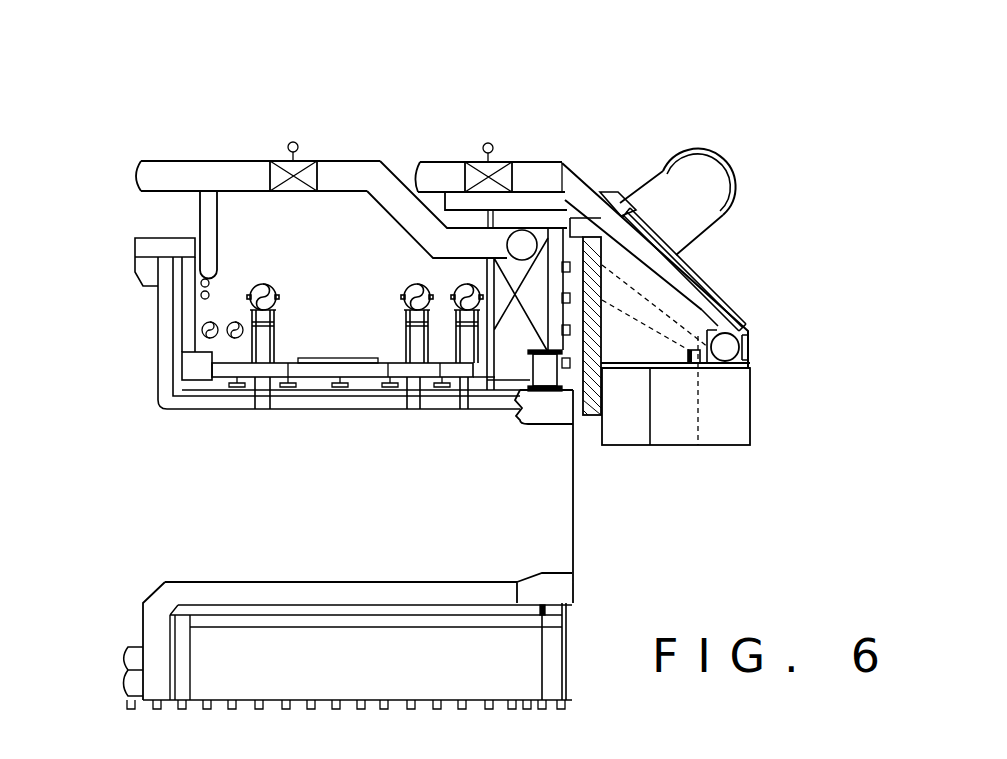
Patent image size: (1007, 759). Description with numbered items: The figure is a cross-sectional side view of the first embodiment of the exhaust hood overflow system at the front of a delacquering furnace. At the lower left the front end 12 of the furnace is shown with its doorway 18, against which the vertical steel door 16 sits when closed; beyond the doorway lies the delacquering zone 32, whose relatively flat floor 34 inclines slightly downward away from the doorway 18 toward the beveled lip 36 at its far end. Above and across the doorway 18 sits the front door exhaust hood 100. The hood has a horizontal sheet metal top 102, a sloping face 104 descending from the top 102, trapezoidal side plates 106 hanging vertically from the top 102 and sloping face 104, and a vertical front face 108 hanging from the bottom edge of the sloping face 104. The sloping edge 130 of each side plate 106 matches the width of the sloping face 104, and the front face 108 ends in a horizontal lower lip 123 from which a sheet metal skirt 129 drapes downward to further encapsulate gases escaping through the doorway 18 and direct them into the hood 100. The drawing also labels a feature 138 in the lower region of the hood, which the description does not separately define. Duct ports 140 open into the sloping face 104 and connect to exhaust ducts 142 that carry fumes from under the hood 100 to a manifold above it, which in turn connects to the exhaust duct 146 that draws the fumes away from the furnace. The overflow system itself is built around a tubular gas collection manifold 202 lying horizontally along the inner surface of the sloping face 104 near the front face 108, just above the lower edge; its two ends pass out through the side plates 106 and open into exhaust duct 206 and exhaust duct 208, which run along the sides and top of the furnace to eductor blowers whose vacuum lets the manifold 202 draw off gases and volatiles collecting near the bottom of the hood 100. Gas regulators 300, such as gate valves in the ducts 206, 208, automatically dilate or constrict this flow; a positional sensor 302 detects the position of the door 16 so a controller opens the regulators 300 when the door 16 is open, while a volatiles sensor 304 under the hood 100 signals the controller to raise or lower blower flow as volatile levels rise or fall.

The front end 12 is at (278, 92).
The door 16 is at (586, 446).
The doorway 18 is at (582, 517).
The delacquering zone 32 is at (367, 545).
The floor 34 is at (232, 582).
The beveled lip 36 is at (148, 593).
The front door exhaust hood 100 is at (751, 111).
The top 102 is at (609, 174).
The sloping face 104 is at (705, 283).
The side plates 106 is at (635, 345).
The front face 108 is at (740, 352).
The lower lip 123 is at (752, 350).
The skirt 129 is at (732, 398).
The sloping edge 130 is at (620, 194).
The roller housing 138 is at (727, 362).
The duct ports 140 is at (665, 232).
The exhaust ducts 142 is at (705, 211).
The exhaust duct 146 is at (730, 158).
The gas collection manifold 202 is at (752, 372).
The exhaust duct 206 is at (561, 162).
The exhaust duct 208 is at (235, 160).
The gas regulator 300 is at (316, 143).
The positional sensor 302 is at (590, 215).
The volatiles sensor 304 is at (712, 340).